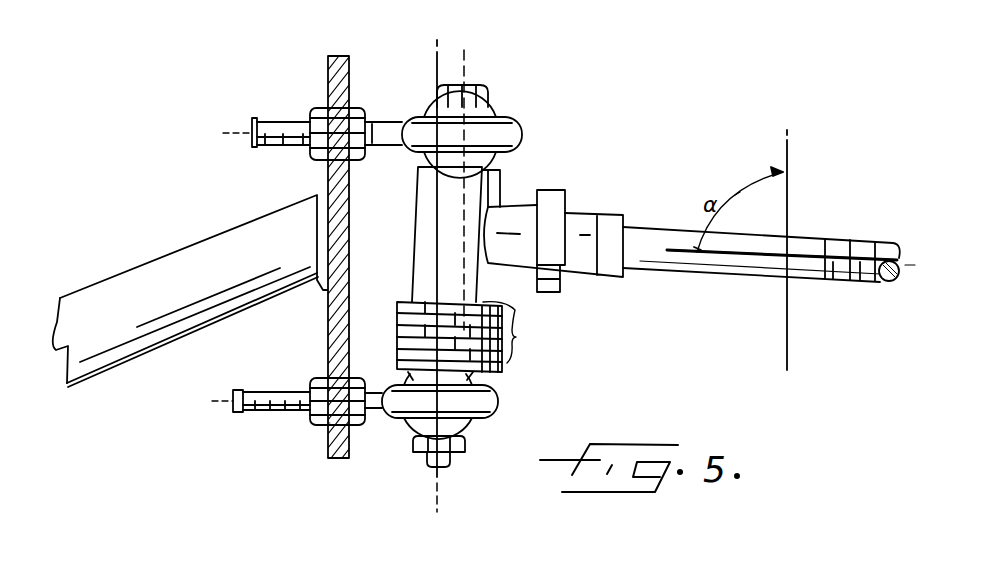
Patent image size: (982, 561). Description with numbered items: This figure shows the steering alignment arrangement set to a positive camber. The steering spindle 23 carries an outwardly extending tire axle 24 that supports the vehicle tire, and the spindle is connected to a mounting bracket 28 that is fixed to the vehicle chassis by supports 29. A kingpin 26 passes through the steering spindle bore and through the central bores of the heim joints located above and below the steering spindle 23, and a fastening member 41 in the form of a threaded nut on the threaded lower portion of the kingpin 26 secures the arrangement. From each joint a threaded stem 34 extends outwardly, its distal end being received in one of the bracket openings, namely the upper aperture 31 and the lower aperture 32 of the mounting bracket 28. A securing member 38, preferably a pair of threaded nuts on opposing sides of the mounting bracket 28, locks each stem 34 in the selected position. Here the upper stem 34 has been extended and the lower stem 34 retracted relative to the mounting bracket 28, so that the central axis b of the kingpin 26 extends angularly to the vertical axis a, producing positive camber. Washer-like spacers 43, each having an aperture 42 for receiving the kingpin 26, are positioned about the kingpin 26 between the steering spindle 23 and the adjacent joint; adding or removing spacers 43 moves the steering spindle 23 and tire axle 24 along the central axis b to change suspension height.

The steering spindle 23 is at (468, 262).
The tire axle 24 is at (837, 250).
The kingpin 26 is at (510, 184).
The mounting bracket 28 is at (350, 290).
The supports 29 is at (180, 250).
The upper aperture 31 is at (331, 93).
The lower aperture 32 is at (328, 423).
The stem 34 is at (268, 118).
The securing member 38 is at (387, 97).
The fastening member 41 is at (467, 447).
The aperture 42 is at (438, 477).
The spacer 43 is at (472, 337).
The vertical axis a is at (435, 62).
The central axis b is at (467, 73).